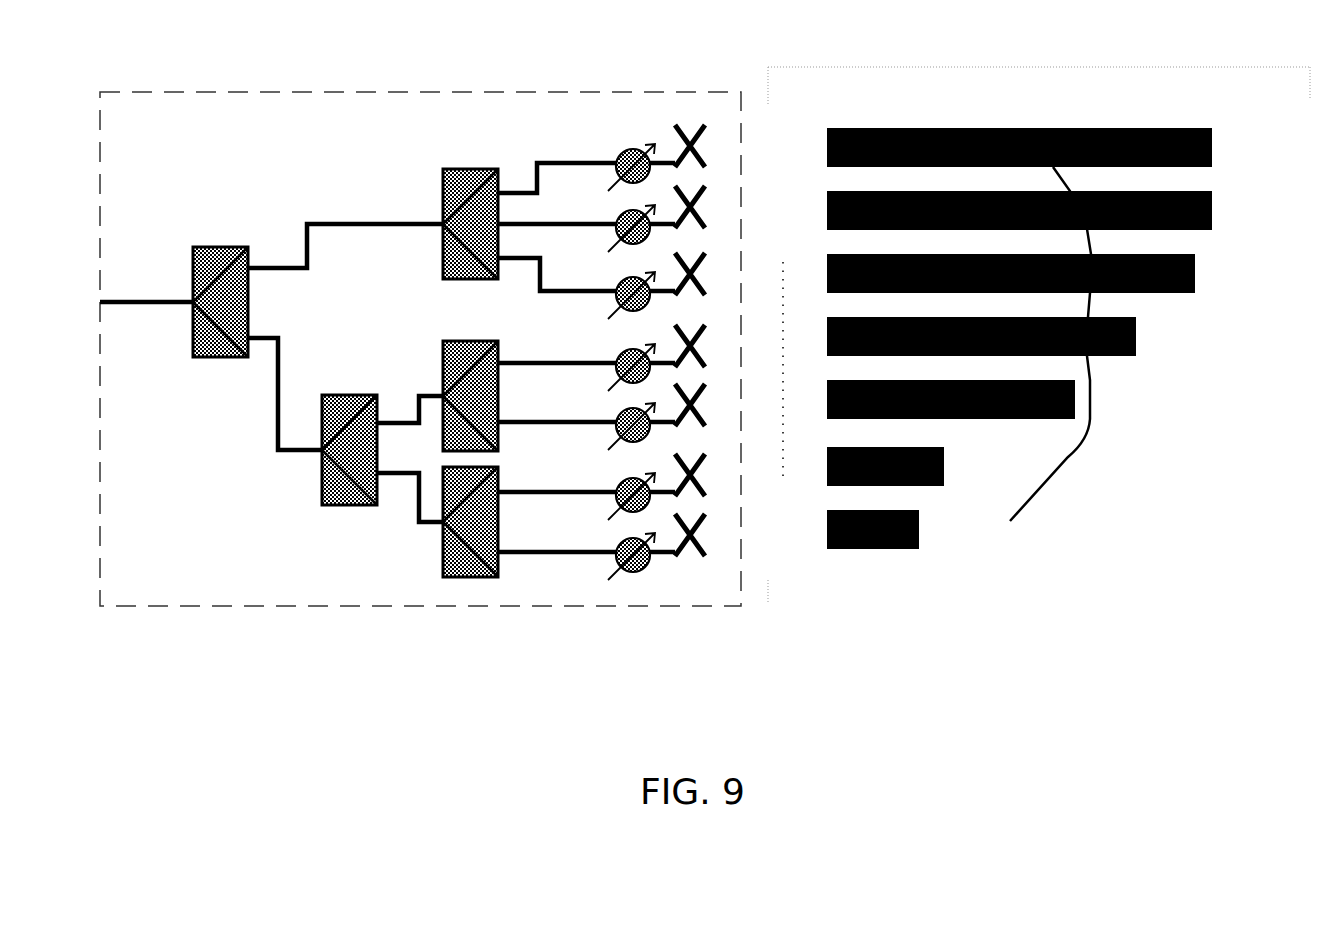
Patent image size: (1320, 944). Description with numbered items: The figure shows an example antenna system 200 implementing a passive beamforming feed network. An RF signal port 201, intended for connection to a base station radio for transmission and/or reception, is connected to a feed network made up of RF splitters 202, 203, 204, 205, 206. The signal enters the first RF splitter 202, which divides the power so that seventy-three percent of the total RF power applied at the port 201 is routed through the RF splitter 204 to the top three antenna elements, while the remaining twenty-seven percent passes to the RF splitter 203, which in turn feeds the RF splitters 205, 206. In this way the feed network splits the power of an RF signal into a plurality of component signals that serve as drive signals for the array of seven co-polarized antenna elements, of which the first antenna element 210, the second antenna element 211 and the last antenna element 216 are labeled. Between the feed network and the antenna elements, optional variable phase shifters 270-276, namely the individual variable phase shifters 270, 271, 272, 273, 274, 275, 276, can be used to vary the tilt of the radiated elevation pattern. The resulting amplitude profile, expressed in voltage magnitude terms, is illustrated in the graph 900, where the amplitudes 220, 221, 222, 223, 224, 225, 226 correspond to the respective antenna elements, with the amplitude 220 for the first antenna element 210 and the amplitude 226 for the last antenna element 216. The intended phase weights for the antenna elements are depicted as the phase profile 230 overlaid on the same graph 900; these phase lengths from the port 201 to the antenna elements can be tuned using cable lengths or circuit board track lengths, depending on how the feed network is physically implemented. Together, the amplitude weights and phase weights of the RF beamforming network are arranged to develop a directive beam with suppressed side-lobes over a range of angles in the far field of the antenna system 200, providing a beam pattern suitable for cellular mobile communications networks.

The antenna system 200 is at (196, 149).
The RF signal port 201 is at (92, 285).
The RF splitter 202 is at (204, 360).
The RF splitter 203 is at (338, 506).
The RF splitter 204 is at (441, 189).
The RF splitter 205 is at (441, 356).
The RF splitter 206 is at (479, 580).
The antenna element 210 is at (714, 141).
The antenna element 211 is at (714, 207).
The antenna element 216 is at (714, 546).
The amplitude 220 is at (1214, 149).
The amplitude 221 is at (1214, 214).
The amplitude 222 is at (1197, 280).
The amplitude 223 is at (1138, 345).
The amplitude 224 is at (1077, 400).
The amplitude 225 is at (946, 478).
The amplitude 226 is at (921, 525).
The phase profile 230 is at (1070, 466).
The variable phase shifters 270-276 is at (606, 578).
The variable phase shifter 270 is at (631, 167).
The variable phase shifter 271 is at (631, 228).
The variable phase shifter 272 is at (631, 295).
The variable phase shifter 273 is at (631, 367).
The variable phase shifter 274 is at (631, 426).
The variable phase shifter 275 is at (631, 496).
The variable phase shifter 276 is at (631, 556).
The graph 900 is at (1029, 691).